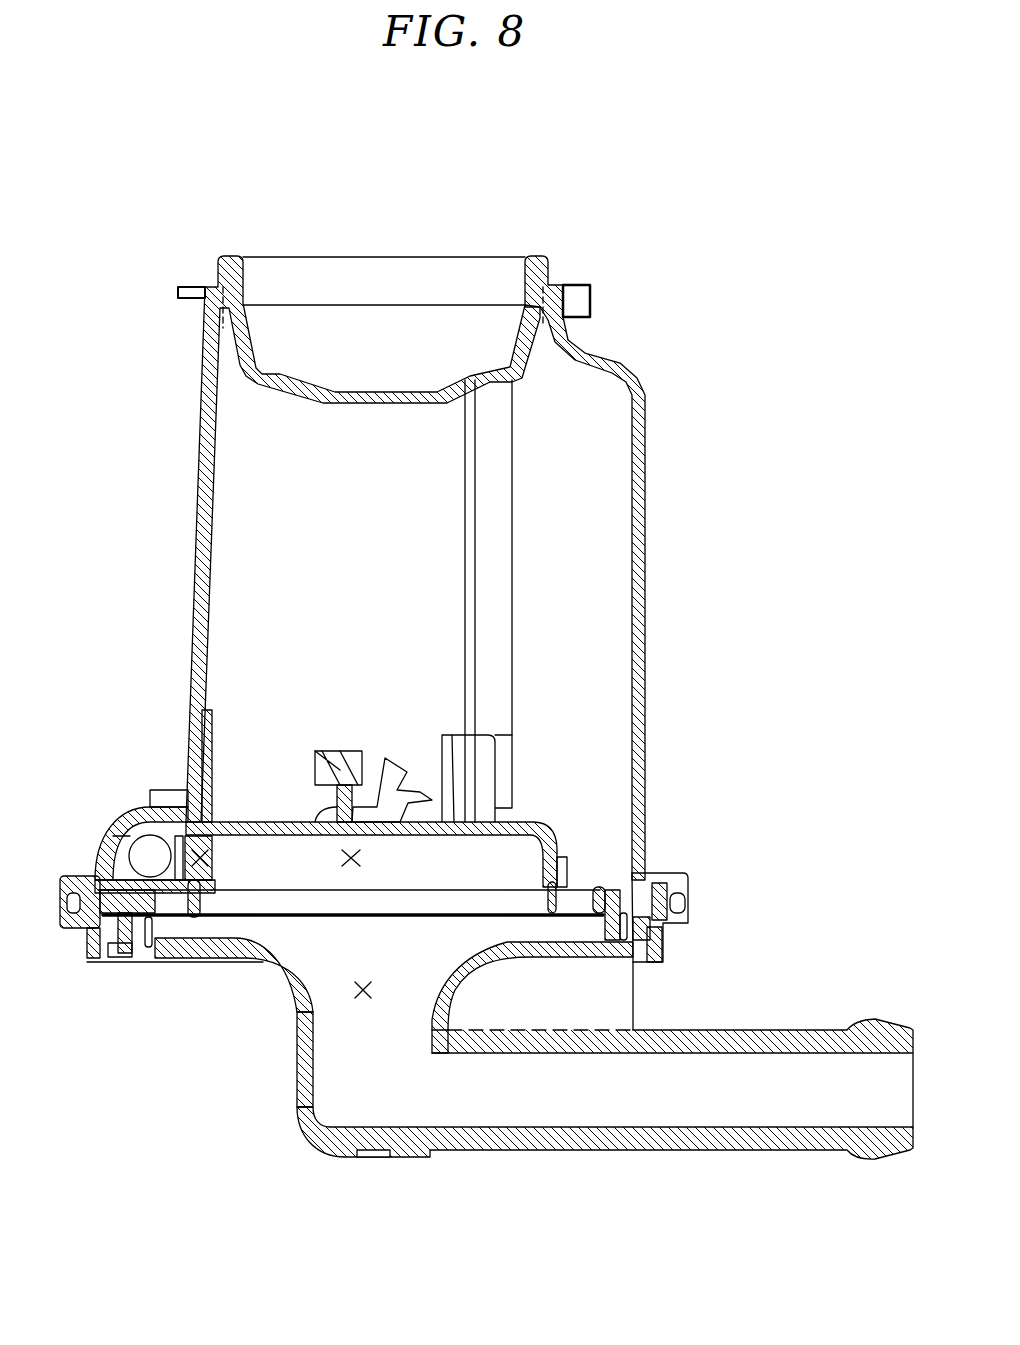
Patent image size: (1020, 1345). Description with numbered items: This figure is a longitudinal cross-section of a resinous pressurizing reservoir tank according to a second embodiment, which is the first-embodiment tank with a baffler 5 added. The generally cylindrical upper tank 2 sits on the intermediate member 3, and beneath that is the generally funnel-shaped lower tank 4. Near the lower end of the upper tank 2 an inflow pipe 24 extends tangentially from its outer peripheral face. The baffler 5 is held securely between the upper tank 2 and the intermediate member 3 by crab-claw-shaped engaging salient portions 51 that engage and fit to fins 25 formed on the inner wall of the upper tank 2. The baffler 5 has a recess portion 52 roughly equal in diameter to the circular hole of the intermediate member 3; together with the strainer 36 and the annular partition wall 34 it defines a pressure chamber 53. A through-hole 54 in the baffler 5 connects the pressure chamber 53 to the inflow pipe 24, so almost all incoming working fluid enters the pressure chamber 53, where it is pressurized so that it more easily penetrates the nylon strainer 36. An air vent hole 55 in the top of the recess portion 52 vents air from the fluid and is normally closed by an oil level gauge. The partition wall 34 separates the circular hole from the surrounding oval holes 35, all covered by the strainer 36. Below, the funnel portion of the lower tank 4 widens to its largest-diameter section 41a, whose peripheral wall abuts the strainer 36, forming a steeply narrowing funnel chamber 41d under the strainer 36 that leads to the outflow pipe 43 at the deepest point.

The upper tank 2 is at (168, 383).
The intermediate member 3 is at (694, 929).
The lower tank 4 is at (740, 1180).
The baffler 5 is at (562, 821).
The inflow pipe 24 is at (138, 862).
The fins 25 is at (490, 448).
The annular partition wall 34 is at (550, 920).
The oval holes 35 is at (597, 905).
The strainer 36 is at (422, 918).
The largest-diameter section 41a is at (163, 945).
The funnel chamber 41d is at (360, 990).
The outflow pipe 43 is at (618, 1150).
The engaging salient portions 51 is at (490, 757).
The recess portion 52 is at (317, 832).
The pressure chamber 53 is at (358, 860).
The through-hole 54 is at (206, 857).
The air vent hole 55 is at (352, 820).